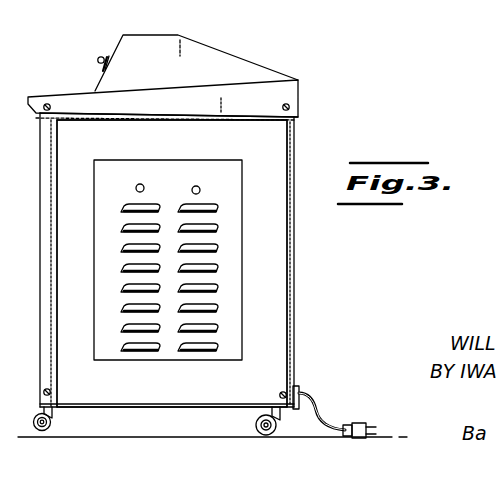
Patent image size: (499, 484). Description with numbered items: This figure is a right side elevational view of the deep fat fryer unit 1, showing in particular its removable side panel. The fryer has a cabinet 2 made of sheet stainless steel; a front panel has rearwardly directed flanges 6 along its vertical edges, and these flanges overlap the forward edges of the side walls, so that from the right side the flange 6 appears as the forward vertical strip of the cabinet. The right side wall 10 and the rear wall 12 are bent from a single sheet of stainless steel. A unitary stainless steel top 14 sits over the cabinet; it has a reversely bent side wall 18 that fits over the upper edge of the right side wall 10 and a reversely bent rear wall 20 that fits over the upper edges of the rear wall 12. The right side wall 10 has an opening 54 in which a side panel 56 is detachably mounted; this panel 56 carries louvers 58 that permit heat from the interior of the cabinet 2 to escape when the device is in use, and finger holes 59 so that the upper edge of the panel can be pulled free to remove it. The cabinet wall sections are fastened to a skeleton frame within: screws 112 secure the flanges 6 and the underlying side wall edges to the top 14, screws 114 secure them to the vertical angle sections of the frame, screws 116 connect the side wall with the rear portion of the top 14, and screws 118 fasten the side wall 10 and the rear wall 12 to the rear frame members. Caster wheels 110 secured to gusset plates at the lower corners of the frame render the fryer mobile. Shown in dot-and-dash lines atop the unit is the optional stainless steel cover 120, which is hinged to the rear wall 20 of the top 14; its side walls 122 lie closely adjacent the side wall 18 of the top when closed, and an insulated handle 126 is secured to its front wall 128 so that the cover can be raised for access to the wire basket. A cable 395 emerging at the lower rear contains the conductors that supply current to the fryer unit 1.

The deep fat fryer unit 1 is at (296, 287).
The cabinet 2 is at (280, 147).
The rearwardly directed flanges 6 is at (50, 174).
The right side wall 10 is at (131, 398).
The rear wall 12 is at (294, 252).
The top 14 is at (287, 92).
The reversely bent side wall 18 is at (220, 92).
The reversely bent rear wall 20 is at (300, 99).
The opening 54 is at (237, 295).
The side panel 56 is at (239, 182).
The louvers 58 is at (182, 227).
The finger holes 59 is at (195, 186).
The caster wheels 110 is at (54, 426).
The screws 112 is at (47, 103).
The screws 114 is at (51, 392).
The screws 116 is at (286, 111).
The screws 118 is at (280, 391).
The cover 120 is at (227, 53).
The side walls 122 is at (180, 36).
The insulated handle 126 is at (98, 56).
The front wall 128 is at (108, 45).
The cable 395 is at (325, 420).